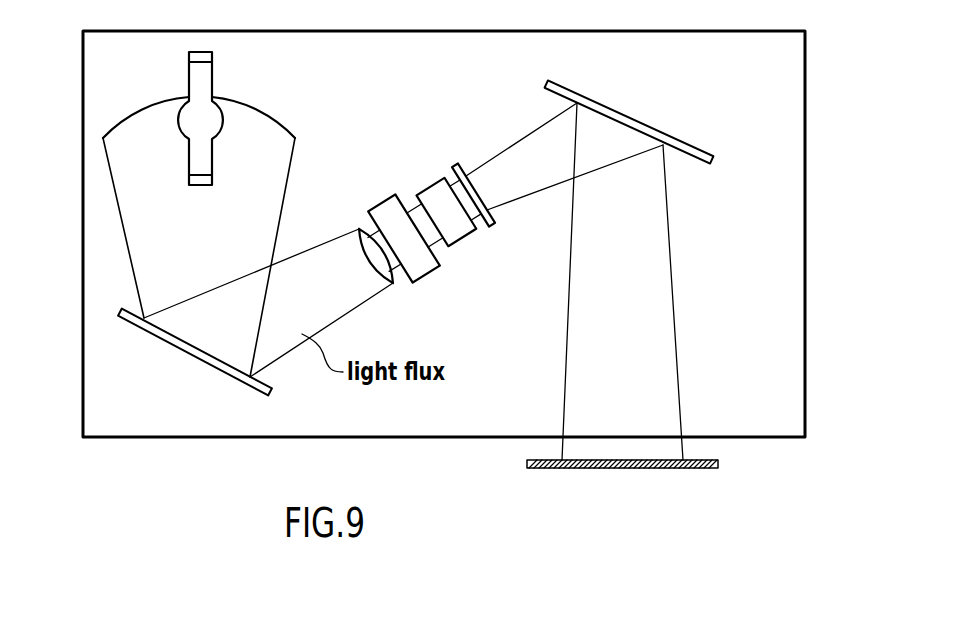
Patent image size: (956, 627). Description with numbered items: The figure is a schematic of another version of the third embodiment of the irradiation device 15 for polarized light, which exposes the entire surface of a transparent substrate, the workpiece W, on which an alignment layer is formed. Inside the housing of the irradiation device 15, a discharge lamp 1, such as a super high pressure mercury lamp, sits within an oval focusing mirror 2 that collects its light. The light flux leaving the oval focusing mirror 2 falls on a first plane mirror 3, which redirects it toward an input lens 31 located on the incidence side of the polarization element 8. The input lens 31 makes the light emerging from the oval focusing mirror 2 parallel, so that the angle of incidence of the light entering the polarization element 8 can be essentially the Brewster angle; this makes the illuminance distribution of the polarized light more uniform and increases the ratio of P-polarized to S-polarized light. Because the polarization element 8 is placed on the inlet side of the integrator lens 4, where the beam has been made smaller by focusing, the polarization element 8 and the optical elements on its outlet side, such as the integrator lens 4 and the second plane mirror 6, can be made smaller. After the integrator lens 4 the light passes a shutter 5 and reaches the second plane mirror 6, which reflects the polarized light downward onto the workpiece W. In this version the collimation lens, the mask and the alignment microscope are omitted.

The discharge lamp 1 is at (212, 75).
The oval focusing mirror 2 is at (293, 128).
The first plane mirror 3 is at (180, 352).
The input lens 31 is at (358, 229).
The integrator lens 4 is at (430, 188).
The shutter 5 is at (457, 168).
The polarization element 8 is at (430, 278).
The second plane mirror 6 is at (650, 124).
The irradiation device 15 is at (122, 438).
The workpiece W is at (713, 446).